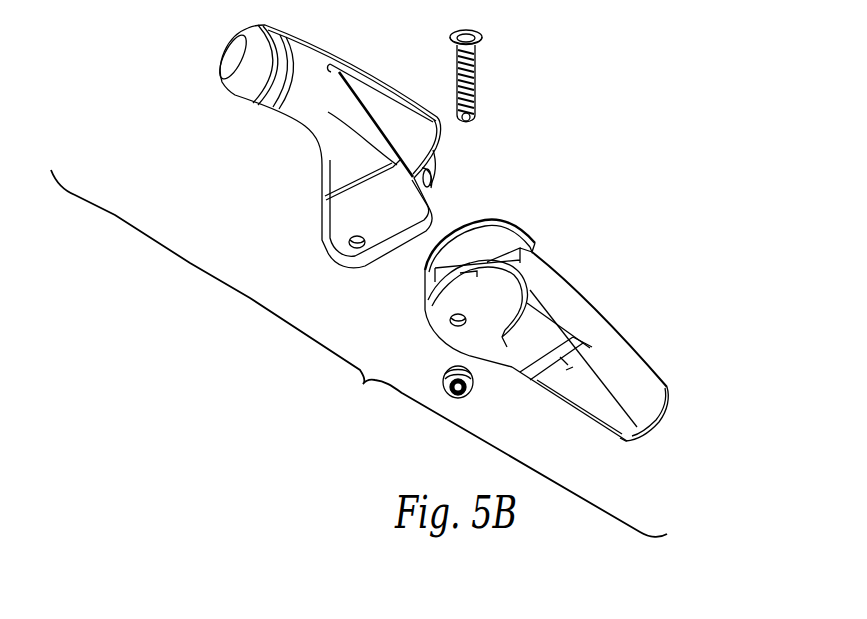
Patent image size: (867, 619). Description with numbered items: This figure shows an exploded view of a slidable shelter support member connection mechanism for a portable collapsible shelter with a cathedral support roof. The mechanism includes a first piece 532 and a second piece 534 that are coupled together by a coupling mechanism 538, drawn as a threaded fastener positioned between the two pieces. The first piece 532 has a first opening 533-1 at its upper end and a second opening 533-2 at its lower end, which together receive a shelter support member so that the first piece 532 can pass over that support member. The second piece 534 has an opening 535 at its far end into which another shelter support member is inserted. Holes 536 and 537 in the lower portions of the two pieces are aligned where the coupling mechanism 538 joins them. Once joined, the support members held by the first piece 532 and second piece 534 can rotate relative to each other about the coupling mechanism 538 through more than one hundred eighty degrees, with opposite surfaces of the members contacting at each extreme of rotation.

The first opening 533-1 is at (222, 44).
The second opening 533-2 is at (450, 151).
The first piece 532 is at (383, 84).
The hole 536 is at (354, 249).
The coupling mechanism 538 is at (478, 86).
The opening 535 is at (666, 434).
The second piece 534 is at (592, 417).
The hole 537 is at (452, 327).